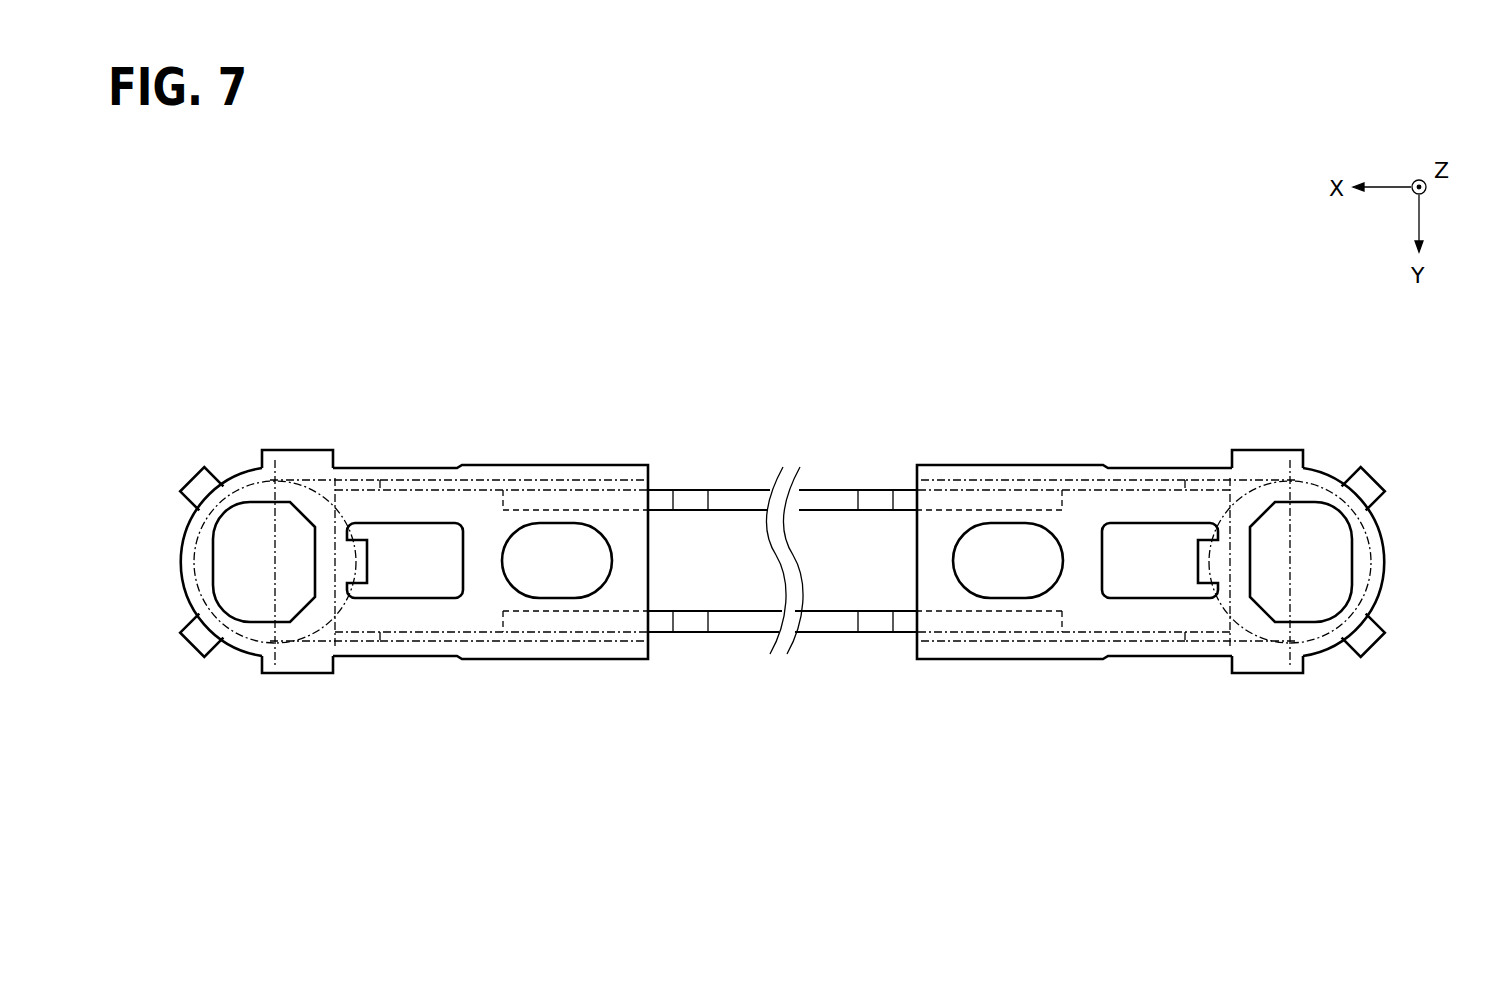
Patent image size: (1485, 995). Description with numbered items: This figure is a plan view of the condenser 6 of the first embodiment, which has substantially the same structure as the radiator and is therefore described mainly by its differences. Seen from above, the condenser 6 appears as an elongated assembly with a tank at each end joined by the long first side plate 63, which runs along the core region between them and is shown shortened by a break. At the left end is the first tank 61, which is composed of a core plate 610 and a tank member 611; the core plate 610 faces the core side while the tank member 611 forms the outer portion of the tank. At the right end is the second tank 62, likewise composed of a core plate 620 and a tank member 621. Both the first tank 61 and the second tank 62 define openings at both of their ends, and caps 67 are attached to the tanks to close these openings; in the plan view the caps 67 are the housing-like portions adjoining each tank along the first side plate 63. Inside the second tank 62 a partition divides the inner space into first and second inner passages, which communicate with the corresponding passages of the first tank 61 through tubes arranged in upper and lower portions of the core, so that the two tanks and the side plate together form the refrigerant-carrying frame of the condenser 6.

The condenser 6 is at (1286, 386).
The first tank 61 is at (237, 564).
The second tank 62 is at (1328, 547).
The first side plate 63 is at (827, 487).
The caps 67 is at (498, 466).
The core plate 610 is at (332, 465).
The tank member 611 is at (192, 640).
The core plate 620 is at (1231, 465).
The tank member 621 is at (1368, 638).